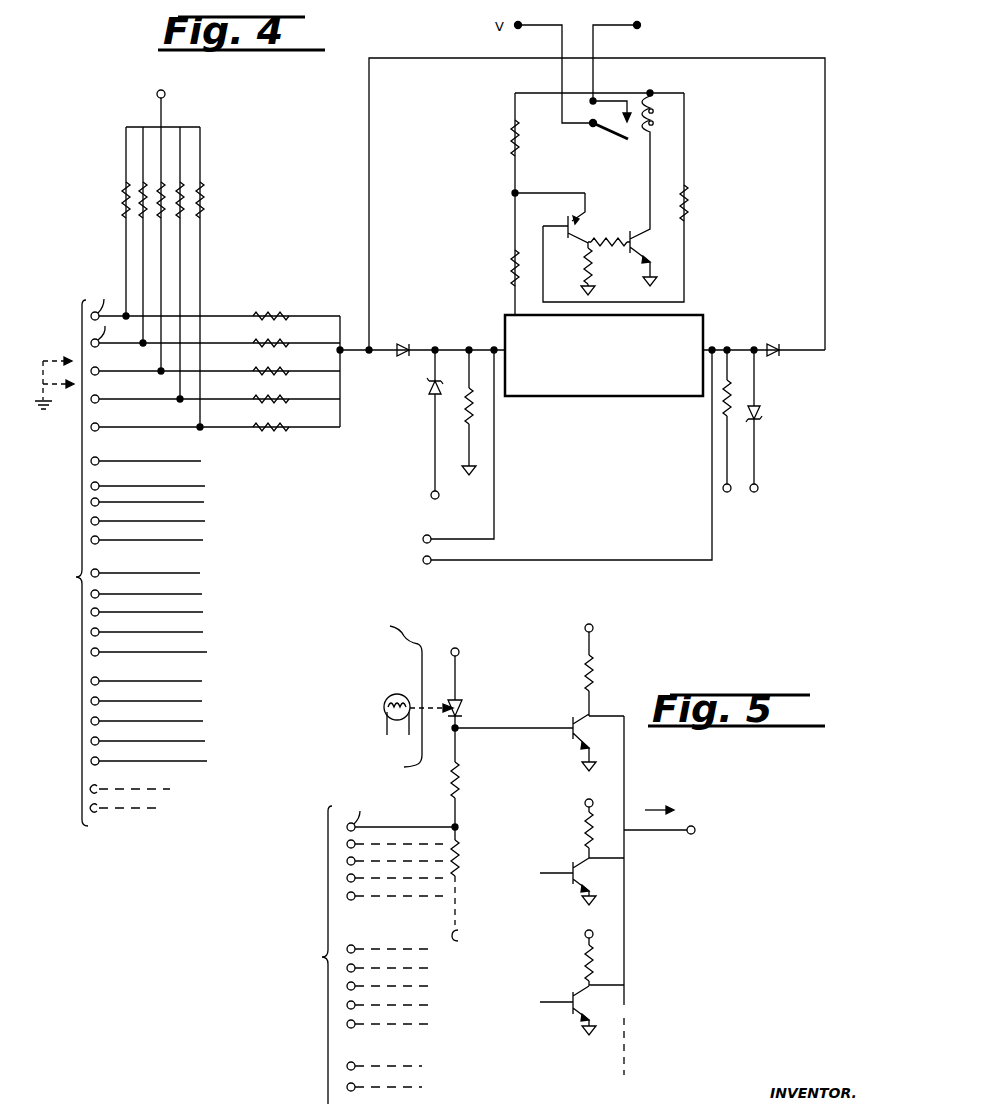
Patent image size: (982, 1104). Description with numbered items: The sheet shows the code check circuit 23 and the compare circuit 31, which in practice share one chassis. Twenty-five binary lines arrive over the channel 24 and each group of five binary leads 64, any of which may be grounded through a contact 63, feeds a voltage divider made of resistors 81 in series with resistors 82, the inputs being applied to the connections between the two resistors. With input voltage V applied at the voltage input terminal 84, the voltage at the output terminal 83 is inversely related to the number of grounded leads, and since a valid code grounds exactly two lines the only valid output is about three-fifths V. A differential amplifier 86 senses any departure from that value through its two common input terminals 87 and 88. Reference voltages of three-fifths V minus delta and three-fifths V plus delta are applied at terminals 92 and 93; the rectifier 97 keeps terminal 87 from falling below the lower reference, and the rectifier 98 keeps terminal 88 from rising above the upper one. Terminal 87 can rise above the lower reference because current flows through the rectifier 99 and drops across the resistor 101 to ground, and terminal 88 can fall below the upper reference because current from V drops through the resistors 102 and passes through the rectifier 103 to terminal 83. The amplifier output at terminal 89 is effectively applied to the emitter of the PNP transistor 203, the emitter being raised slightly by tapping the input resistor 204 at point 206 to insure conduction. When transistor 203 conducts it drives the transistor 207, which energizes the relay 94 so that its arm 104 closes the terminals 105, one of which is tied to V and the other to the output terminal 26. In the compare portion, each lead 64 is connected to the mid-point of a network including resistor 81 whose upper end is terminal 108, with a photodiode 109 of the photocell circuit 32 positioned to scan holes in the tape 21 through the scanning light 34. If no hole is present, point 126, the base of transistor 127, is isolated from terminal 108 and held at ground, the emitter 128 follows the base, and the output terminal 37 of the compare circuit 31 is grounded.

In FIG. 4, the voltage input terminal 84 is at (165, 94).
In FIG. 5, the voltage input terminal 84 is at (465, 942).
In FIG. 4, the resistors 81 is at (182, 204).
In FIG. 5, the resistors 81 is at (462, 852).
In FIG. 4, the binary leads 64 is at (212, 318).
In FIG. 5, the binary leads 64 is at (401, 815).
In FIG. 4, the channel or cable 24 is at (78, 577).
In FIG. 5, the channel or cable 24 is at (322, 957).
In FIG. 4, the contact 63 is at (68, 352).
In FIG. 4, the resistors 82 is at (261, 318).
In FIG. 4, the output terminal 83 is at (364, 358).
In FIG. 4, the rectifier 99 is at (405, 338).
In FIG. 4, the rectifier 97 is at (430, 395).
In FIG. 4, the reference voltage terminal 92 is at (431, 493).
In FIG. 4, the resistor 101 is at (474, 406).
In FIG. 4, the input terminal 87 is at (423, 539).
In FIG. 4, the input terminal 88 is at (423, 560).
In FIG. 4, the differential amplifier 86 is at (581, 398).
In FIG. 4, the output terminal 89 is at (512, 312).
In FIG. 4, the input resistor 204 is at (508, 138).
In FIG. 4, the tap point 206 is at (512, 193).
In FIG. 4, the PNP transistor 203 is at (580, 214).
In FIG. 4, the transistor 207 is at (688, 241).
In FIG. 4, the relay terminals 105 is at (581, 114).
In FIG. 4, the relay arm 104 is at (616, 136).
In FIG. 4, the relay 94 is at (655, 113).
In FIG. 4, the output terminal 26 is at (641, 25).
In FIG. 4, the resistors 102 is at (745, 402).
In FIG. 4, the rectifier 98 is at (764, 414).
In FIG. 4, the reference voltage terminal 93 is at (758, 488).
In FIG. 4, the rectifier 103 is at (776, 344).
In FIG. 4, the code check circuit 23 is at (711, 566).
In FIG. 5, the tape 21 is at (395, 691).
In FIG. 5, the scanning light 34 is at (392, 694).
In FIG. 5, the terminal 108 is at (459, 653).
In FIG. 5, the photocell circuit 32 is at (464, 702).
In FIG. 5, the photodiode 109 is at (468, 708).
In FIG. 5, the point 126 is at (458, 732).
In FIG. 5, the compare circuit 31 is at (314, 796).
In FIG. 5, the transistor 127 is at (545, 722).
In FIG. 5, the emitter 128 is at (598, 720).
In FIG. 5, the output terminal 37 is at (694, 834).